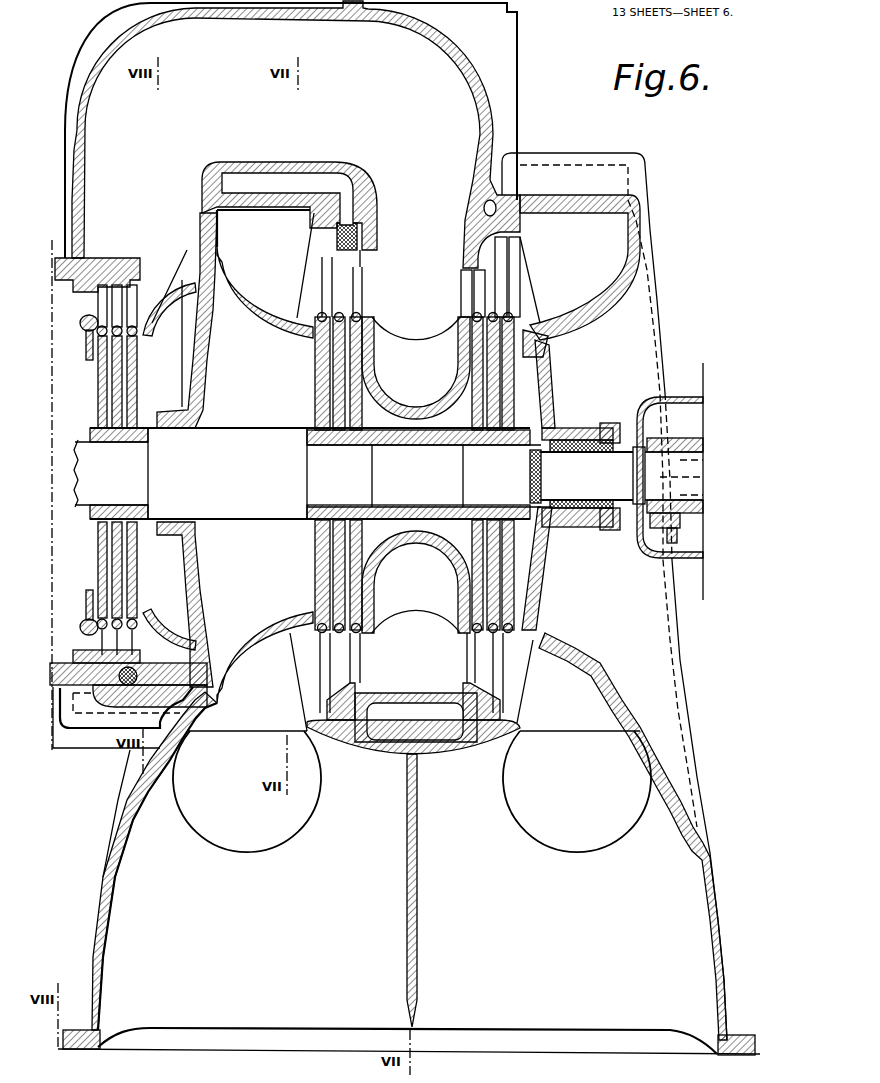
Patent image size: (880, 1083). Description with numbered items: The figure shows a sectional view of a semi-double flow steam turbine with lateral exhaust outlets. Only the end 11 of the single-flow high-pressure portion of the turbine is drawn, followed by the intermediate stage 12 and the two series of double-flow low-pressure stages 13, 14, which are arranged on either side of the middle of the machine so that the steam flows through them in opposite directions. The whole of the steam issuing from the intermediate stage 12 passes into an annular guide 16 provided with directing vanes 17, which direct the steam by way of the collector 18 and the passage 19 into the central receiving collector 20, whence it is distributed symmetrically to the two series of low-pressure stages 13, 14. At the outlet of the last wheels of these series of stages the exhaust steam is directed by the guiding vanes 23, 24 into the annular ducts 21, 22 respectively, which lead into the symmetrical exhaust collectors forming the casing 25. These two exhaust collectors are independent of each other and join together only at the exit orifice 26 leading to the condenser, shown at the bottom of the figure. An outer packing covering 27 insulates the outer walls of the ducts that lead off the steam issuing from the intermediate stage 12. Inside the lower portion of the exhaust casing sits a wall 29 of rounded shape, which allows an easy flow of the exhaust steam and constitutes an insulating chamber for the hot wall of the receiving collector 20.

The end of the single-flow high-pressure portion 11 is at (90, 345).
The intermediate stage 12 is at (120, 300).
The series of double-flow stages 13 is at (337, 275).
The series of double-flow stages 14 is at (485, 478).
The annular guide 16 is at (193, 277).
The directing vanes 17 is at (153, 268).
The collector 18 is at (78, 177).
The passage 19 is at (241, 14).
The central receiving collector 20 is at (392, 405).
The annular duct 21 is at (247, 310).
The annular duct 22 is at (607, 280).
The guiding vanes 23 is at (251, 240).
The guiding vanes 24 is at (576, 278).
The casing 25 is at (307, 190).
The exit orifice 26 is at (325, 1022).
The outer packing covering 27 is at (292, 134).
The wall 29 is at (363, 757).